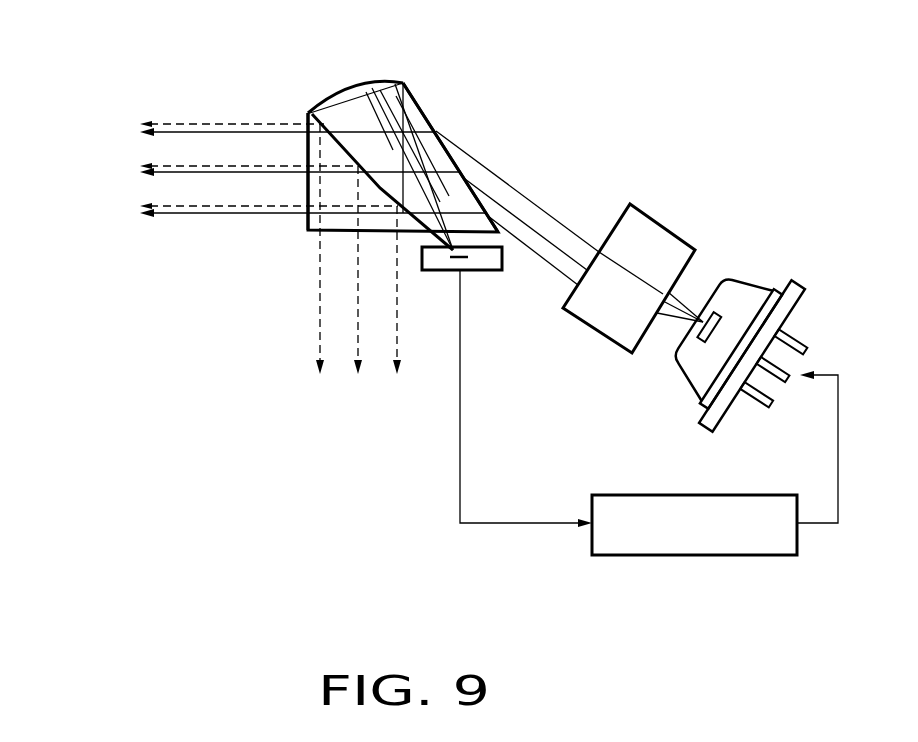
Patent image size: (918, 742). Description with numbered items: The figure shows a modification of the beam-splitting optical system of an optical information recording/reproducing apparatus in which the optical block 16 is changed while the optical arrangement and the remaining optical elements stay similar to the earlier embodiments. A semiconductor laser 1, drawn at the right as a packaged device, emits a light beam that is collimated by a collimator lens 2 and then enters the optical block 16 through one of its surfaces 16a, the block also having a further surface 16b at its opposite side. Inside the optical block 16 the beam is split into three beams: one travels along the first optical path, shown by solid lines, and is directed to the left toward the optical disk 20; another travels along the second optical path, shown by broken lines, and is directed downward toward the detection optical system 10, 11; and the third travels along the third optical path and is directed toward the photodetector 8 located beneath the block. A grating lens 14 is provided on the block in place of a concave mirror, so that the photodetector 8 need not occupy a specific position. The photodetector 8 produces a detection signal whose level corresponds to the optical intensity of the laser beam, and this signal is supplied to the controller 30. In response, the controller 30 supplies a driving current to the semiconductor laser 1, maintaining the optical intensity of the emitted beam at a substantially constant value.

The semiconductor laser 1 is at (793, 284).
The collimator lens 2 is at (667, 230).
The photodetector 8 is at (480, 272).
The detection optical system 10 is at (365, 299).
The detection optical system 11 is at (365, 299).
The grating lens 14 is at (373, 84).
The optical block 16 is at (410, 97).
The prism incident surface 16a is at (430, 122).
The prism surface 16b is at (312, 112).
The optical disk 20 is at (249, 169).
The controller 30 is at (690, 557).